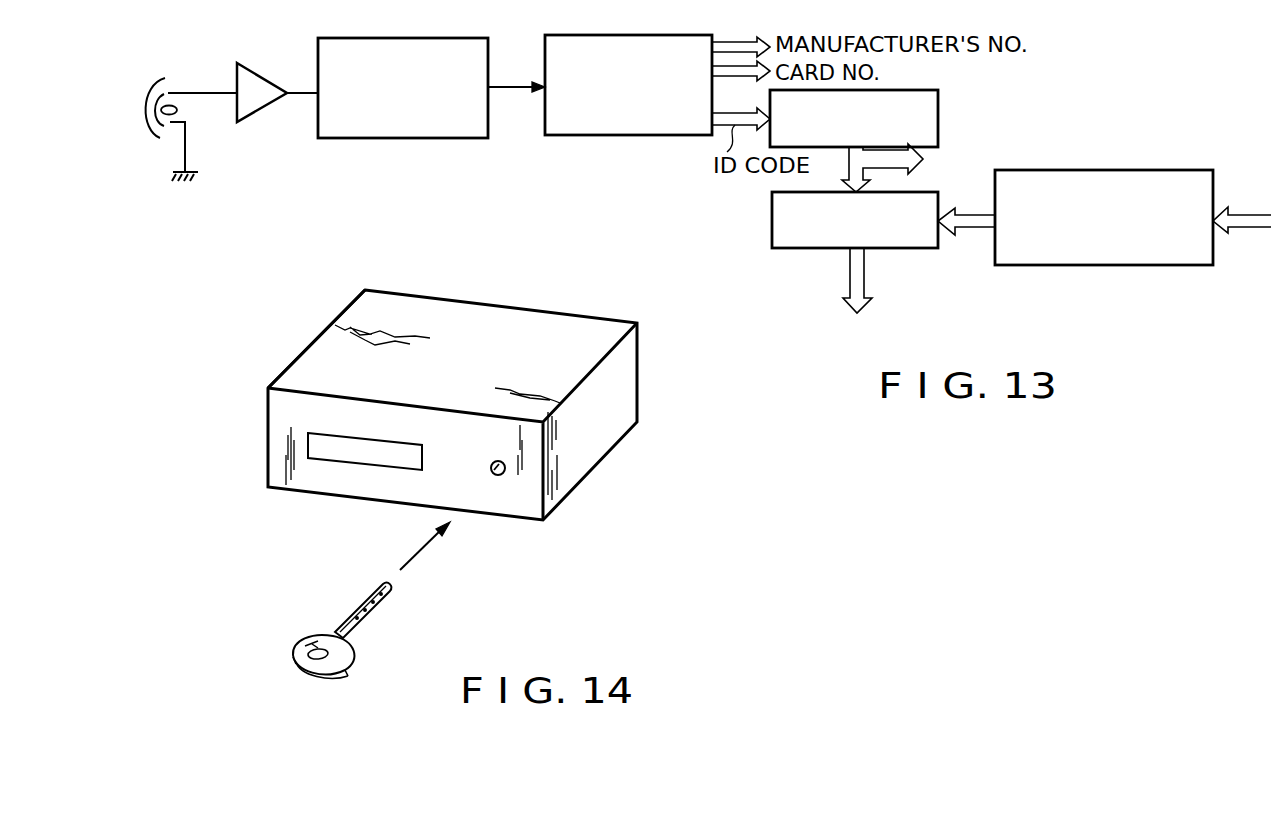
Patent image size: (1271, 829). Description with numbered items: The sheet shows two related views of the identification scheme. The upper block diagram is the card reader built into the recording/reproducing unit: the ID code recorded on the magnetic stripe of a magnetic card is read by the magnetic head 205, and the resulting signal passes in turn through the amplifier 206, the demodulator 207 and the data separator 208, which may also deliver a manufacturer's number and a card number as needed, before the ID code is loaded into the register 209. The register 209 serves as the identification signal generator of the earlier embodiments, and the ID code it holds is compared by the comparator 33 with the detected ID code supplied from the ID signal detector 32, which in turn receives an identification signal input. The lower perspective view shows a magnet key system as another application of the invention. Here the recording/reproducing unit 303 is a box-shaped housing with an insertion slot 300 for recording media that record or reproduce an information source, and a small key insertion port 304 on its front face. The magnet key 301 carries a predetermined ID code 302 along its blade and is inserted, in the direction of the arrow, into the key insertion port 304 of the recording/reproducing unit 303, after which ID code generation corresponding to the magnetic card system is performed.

In FIG. 13, the magnetic head 205 is at (150, 145).
In FIG. 13, the amplifier 206 is at (247, 122).
In FIG. 13, the demodulator 207 is at (415, 138).
In FIG. 13, the data separator 208 is at (625, 135).
In FIG. 13, the register 209 is at (938, 107).
In FIG. 13, the ID signal detector 32 is at (1202, 143).
In FIG. 13, the comparator 33 is at (772, 235).
In FIG. 14, the insertion slot 300 is at (322, 463).
In FIG. 14, the magnet key 301 is at (358, 653).
In FIG. 14, the ID code 302 is at (383, 600).
In FIG. 14, the recording/reproducing unit 303 is at (617, 450).
In FIG. 14, the key insertion port 304 is at (500, 476).